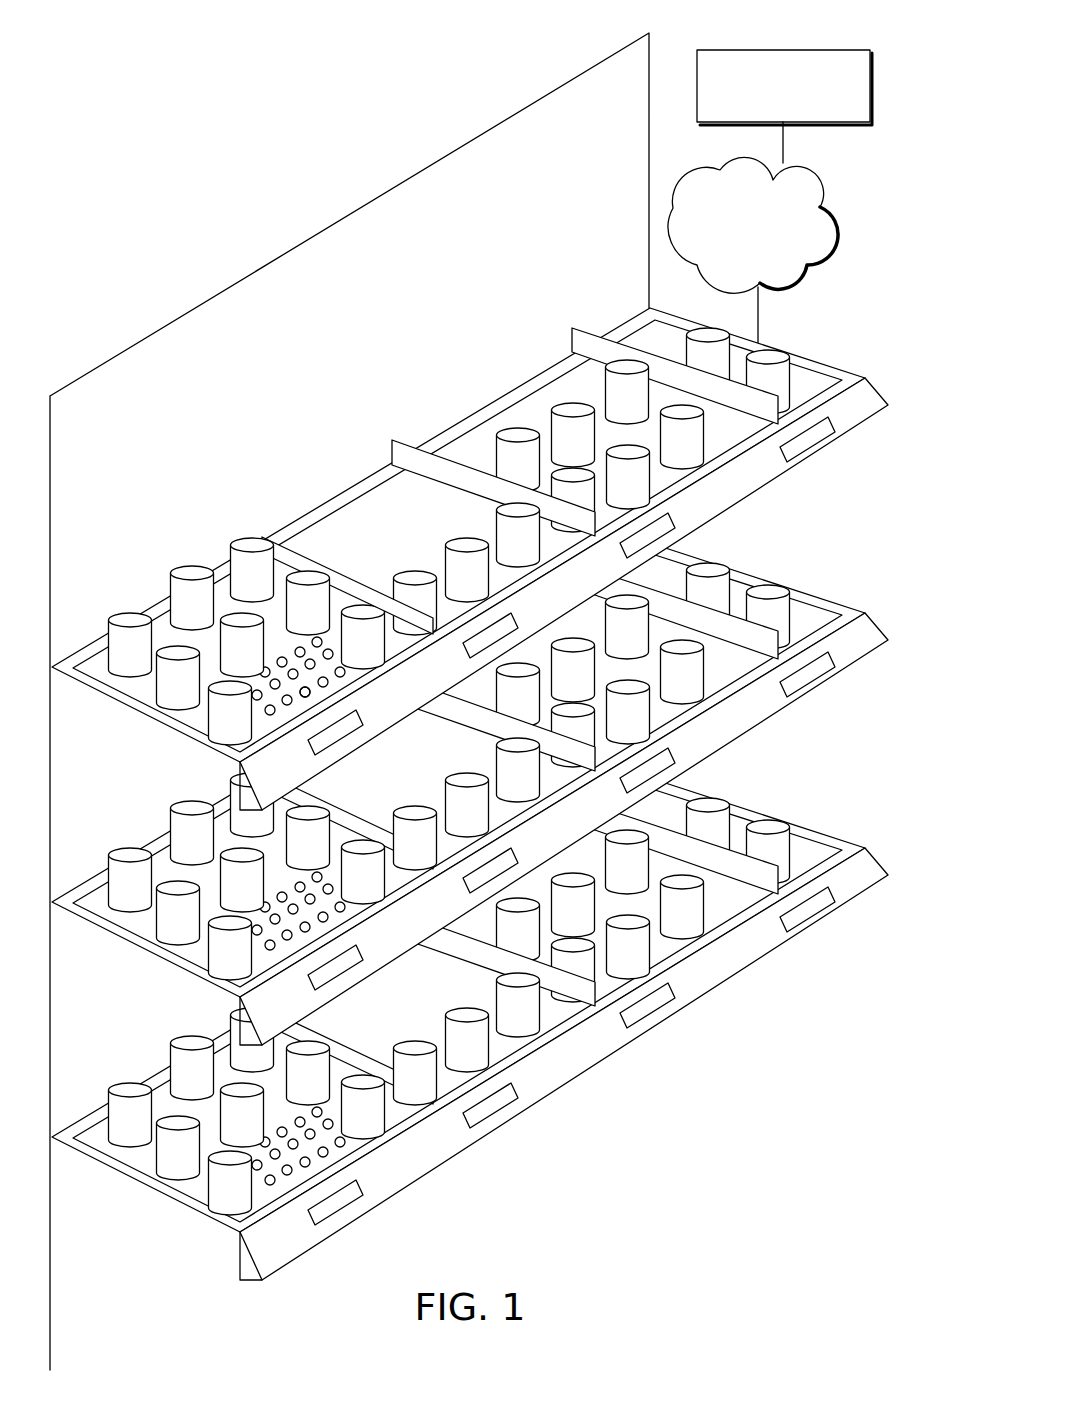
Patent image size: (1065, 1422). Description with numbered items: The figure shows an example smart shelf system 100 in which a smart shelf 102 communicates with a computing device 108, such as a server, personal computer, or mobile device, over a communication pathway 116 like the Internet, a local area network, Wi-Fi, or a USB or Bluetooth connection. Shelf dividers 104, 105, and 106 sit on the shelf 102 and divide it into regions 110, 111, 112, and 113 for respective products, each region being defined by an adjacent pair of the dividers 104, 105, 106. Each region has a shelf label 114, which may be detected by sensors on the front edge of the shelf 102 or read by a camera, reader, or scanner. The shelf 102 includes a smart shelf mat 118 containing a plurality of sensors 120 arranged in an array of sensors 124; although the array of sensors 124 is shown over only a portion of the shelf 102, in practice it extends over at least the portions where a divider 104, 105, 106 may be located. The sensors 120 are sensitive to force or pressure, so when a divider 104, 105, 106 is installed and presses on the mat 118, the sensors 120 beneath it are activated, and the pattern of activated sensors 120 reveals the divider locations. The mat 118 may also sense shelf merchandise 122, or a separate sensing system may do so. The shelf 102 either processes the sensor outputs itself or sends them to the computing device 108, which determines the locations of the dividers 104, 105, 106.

The smart shelf system 100 is at (247, 97).
The smart shelf 102 is at (145, 747).
The shelf divider 104 is at (762, 408).
The shelf divider 105 is at (404, 450).
The shelf divider 106 is at (415, 634).
The computing device 108 is at (783, 50).
The region 110 is at (643, 347).
The region 111 is at (457, 455).
The region 112 is at (340, 532).
The region 113 is at (212, 565).
The shelf label 114 is at (513, 623).
The communication pathway 116 is at (782, 232).
The smart shelf mat 118 is at (91, 663).
The sensor 120 is at (307, 695).
The shelf merchandise 122 is at (780, 387).
The array of sensors 124 is at (277, 643).